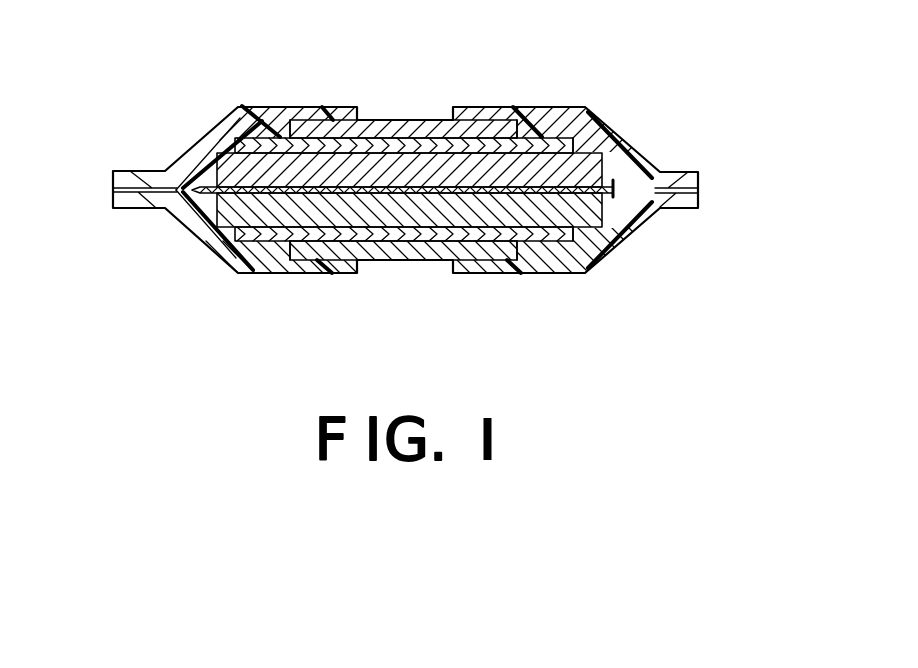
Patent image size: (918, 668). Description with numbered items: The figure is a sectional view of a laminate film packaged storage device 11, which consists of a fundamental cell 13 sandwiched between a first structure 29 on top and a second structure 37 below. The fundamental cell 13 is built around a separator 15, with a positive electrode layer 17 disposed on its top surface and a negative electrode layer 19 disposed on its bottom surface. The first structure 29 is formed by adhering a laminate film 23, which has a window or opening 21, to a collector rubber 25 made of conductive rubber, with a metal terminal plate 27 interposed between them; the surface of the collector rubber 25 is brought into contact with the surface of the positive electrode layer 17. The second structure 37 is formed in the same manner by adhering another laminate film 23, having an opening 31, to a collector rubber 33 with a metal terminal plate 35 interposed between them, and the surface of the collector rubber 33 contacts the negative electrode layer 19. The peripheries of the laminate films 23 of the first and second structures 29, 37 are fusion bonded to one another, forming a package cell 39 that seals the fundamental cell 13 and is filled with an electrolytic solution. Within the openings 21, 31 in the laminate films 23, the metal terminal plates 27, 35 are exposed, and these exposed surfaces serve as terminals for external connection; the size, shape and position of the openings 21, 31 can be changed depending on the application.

The laminate film packaged storage device 11 is at (700, 152).
The fundamental cell 13 is at (590, 178).
The separator 15 is at (539, 172).
The positive electrode layer 17 is at (500, 125).
The negative electrode layer 19 is at (610, 181).
The opening 21 is at (410, 119).
The laminate film 23 is at (468, 107).
The collector rubber 25 is at (252, 128).
The metal terminal plate 27 is at (322, 106).
The first structure 29 is at (186, 144).
The opening 31 is at (409, 260).
The collector rubber 33 is at (258, 250).
The metal terminal plate 35 is at (318, 262).
The second structure 37 is at (174, 224).
The package cell 39 is at (706, 190).